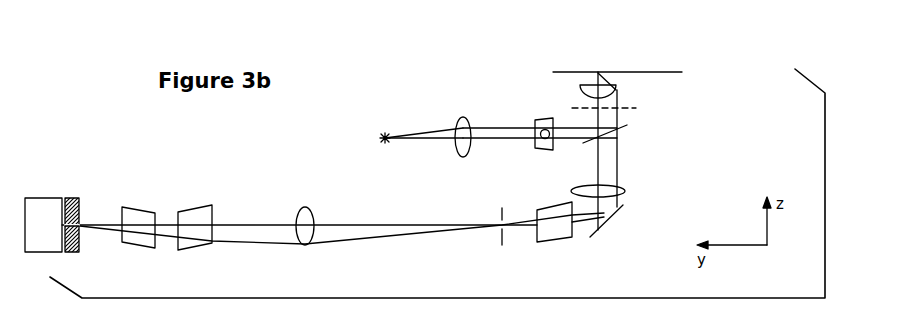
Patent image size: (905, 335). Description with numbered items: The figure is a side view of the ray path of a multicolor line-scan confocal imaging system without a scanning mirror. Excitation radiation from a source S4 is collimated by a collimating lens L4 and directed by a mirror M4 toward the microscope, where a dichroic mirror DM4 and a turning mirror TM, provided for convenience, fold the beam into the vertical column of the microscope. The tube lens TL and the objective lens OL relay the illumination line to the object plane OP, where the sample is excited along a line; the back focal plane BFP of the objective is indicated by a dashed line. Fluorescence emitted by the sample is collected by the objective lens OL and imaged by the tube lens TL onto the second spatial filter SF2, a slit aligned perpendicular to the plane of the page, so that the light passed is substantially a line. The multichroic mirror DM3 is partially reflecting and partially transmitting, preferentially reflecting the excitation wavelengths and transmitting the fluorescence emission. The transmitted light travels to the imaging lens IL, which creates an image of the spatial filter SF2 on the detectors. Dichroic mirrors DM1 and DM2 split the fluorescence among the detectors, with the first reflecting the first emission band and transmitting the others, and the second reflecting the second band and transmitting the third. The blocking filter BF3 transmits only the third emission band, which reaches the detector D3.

The detector D3 is at (43, 239).
The blocking filter BF3 is at (64, 215).
The dichroic mirror DM2 is at (136, 241).
The dichroic mirror DM1 is at (193, 216).
The imaging lens IL is at (305, 214).
The second spatial filter SF2 is at (493, 216).
The multichroic mirror DM3 is at (551, 238).
The tube lens TL is at (610, 191).
The turning mirror TM is at (619, 221).
The source of electromagnetic radiation S4 is at (416, 150).
The collimating lens L4 is at (534, 151).
The mirror M4 is at (537, 122).
The dichroic mirror DM4 is at (623, 137).
The back focal plane BFP is at (622, 107).
The objective lens OL is at (611, 87).
The object plane OP is at (630, 73).